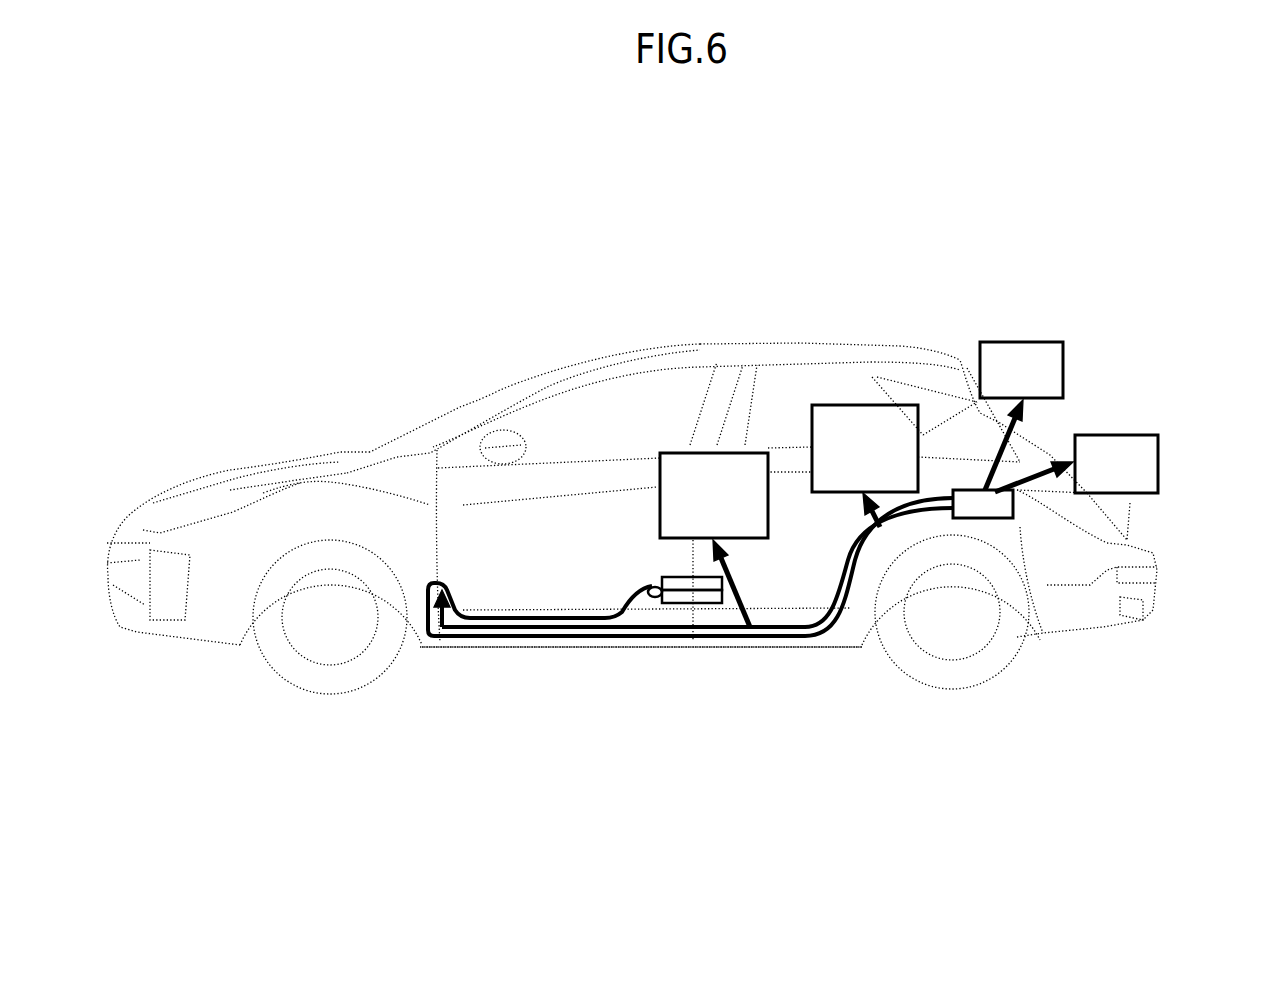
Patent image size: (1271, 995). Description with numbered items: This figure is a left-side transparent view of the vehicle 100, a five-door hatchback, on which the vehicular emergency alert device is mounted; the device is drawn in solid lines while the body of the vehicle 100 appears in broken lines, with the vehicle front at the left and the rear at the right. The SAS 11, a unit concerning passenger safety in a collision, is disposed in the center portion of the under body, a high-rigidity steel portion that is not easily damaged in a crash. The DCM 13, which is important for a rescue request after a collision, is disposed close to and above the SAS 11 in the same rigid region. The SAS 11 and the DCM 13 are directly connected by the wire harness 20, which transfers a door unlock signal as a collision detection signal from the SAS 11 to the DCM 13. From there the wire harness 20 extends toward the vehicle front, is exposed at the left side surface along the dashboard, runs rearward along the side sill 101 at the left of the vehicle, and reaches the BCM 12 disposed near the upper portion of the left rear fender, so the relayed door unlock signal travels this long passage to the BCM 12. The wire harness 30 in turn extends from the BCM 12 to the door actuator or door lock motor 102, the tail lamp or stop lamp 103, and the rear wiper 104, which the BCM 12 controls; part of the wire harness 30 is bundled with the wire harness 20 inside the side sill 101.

The vehicle 100 is at (906, 202).
The side sill 101 is at (531, 645).
The door actuator (door lock motor) 102 is at (678, 453).
The tail lamp (stop lamp) 103 is at (1158, 465).
The rear wiper 104 is at (1063, 365).
The SAS 11 is at (673, 604).
The BCM 12 is at (978, 489).
The DCM 13 is at (667, 577).
The wire harness 20 is at (612, 645).
The wire harness 30 is at (850, 567).